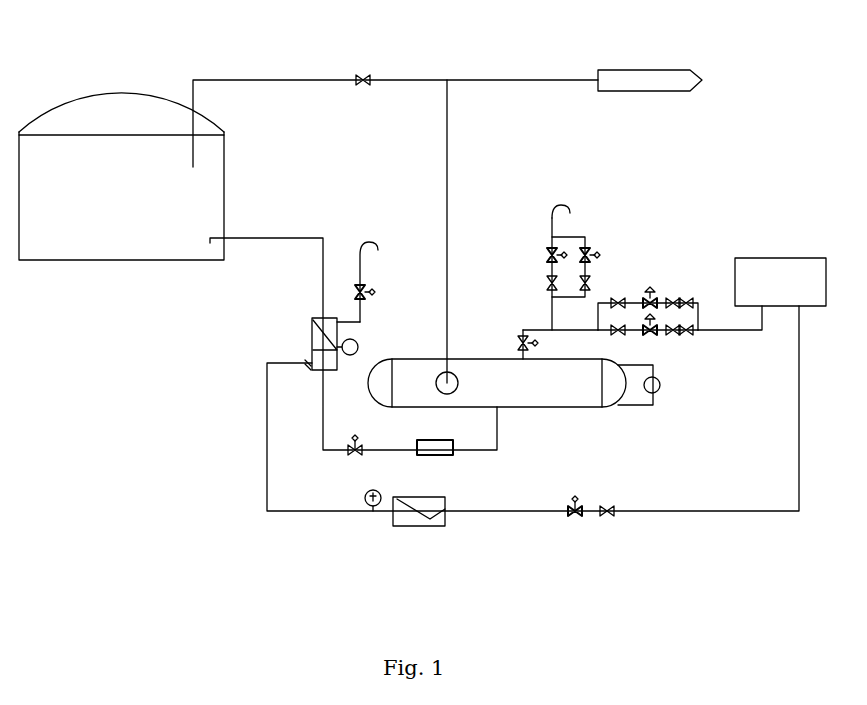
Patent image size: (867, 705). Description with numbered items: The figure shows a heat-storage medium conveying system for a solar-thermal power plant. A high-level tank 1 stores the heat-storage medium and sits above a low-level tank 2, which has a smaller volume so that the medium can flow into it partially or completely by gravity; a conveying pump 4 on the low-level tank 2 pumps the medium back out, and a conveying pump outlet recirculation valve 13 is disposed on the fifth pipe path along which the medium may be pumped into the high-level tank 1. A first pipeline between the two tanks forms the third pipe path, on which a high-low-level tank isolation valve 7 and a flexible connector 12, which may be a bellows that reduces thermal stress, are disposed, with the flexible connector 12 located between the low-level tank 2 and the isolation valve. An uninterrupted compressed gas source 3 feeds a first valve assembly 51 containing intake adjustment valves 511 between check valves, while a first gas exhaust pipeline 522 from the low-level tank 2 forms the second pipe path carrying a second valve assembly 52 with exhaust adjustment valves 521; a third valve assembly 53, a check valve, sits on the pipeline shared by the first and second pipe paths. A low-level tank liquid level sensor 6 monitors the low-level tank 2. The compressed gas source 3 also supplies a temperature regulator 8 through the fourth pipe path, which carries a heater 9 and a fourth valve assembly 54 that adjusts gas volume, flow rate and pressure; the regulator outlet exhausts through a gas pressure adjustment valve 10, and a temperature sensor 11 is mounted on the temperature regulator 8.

The high-level tank 1 is at (62, 242).
The low-level tank 2 is at (565, 395).
The uninterrupted compressed gas source 3 is at (764, 254).
The conveying pump 4 is at (449, 379).
The low-level tank liquid level sensor 6 is at (661, 388).
The high-low-level tank isolation valve 7 is at (352, 458).
The temperature regulator 8 is at (320, 331).
The heater 9 is at (447, 527).
The gas pressure adjustment valve 10 is at (362, 291).
The temperature sensor 11 is at (359, 344).
The flexible connector 12 is at (455, 453).
The conveying pump outlet recirculation valve 13 is at (364, 77).
The first valve assembly 51 is at (675, 342).
The second valve assembly 52 is at (592, 243).
The third valve assembly 53 is at (521, 333).
The fourth valve assembly 54 is at (590, 518).
The intake adjustment valve 511 is at (653, 290).
The exhaust adjustment valve 521 is at (550, 252).
The first gas exhaust pipeline 522 is at (566, 211).